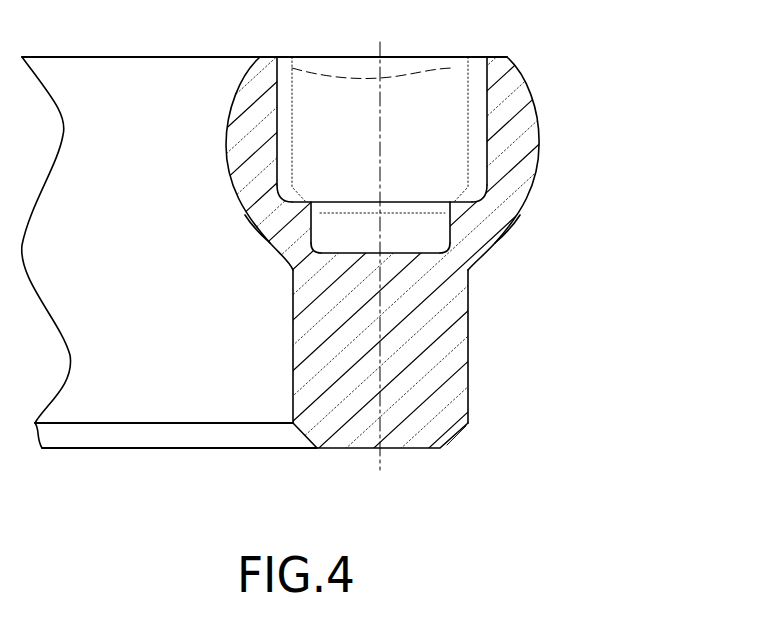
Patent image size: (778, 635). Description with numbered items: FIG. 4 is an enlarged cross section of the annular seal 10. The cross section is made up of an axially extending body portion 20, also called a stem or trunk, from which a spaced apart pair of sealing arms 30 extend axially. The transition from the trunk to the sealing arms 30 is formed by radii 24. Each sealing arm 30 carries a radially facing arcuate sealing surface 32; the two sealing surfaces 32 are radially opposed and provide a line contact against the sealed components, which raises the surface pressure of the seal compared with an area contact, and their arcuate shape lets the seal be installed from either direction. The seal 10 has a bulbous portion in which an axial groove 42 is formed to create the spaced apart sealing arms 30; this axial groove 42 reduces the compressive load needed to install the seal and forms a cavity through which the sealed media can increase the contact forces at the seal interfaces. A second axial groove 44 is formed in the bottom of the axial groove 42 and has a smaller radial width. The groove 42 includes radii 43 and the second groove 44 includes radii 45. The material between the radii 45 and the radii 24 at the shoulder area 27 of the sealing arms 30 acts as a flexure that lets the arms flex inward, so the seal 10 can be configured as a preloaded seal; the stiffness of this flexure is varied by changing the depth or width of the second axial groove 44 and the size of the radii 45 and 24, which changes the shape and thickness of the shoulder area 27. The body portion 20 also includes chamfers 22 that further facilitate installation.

The annular seal 10 is at (570, 87).
The body portion 20 is at (314, 88).
The chamfers 22 is at (306, 437).
The radii 24 is at (290, 274).
The shoulder area 27 is at (276, 249).
The sealing arms 30 is at (210, 182).
The arcuate sealing surface 32 is at (229, 125).
The axial groove 42 is at (456, 86).
The radii 43 is at (274, 184).
The second axial groove 44 is at (342, 192).
The radii 45 is at (323, 247).